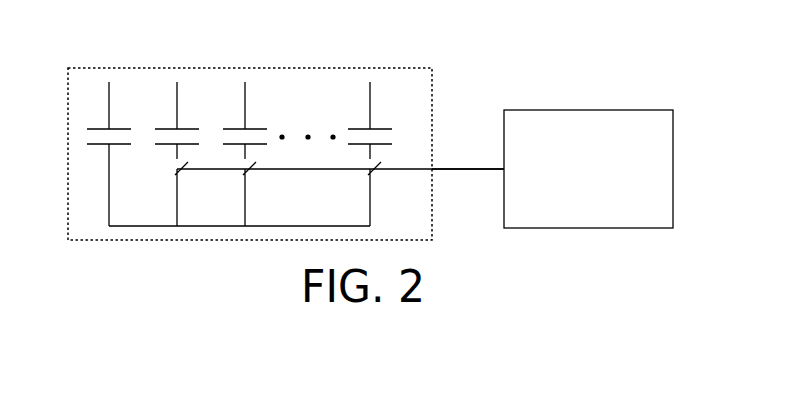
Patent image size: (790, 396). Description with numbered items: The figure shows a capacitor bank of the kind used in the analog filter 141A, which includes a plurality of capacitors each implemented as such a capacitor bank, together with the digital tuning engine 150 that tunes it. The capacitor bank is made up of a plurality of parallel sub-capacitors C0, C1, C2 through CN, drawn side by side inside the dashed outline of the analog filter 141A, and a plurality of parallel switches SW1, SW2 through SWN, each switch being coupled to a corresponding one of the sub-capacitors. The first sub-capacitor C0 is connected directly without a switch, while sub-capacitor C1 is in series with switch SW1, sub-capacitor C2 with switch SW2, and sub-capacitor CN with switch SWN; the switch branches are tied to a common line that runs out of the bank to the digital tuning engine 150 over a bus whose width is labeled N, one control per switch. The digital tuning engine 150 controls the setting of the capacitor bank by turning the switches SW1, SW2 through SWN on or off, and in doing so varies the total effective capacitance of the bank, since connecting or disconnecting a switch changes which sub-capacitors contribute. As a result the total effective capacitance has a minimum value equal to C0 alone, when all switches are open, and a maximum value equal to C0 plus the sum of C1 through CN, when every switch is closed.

The analog filter 141A is at (286, 136).
The digital tuning engine 150 is at (590, 110).
The number of switchable sub-capacitors N is at (462, 177).
The sub-capacitor C0 is at (111, 154).
The sub-capacitor C1 is at (179, 120).
The sub-capacitor C2 is at (247, 120).
The sub-capacitor CN is at (373, 120).
The switch SW1 is at (199, 194).
The switch SW2 is at (267, 194).
The switch SWN is at (392, 194).